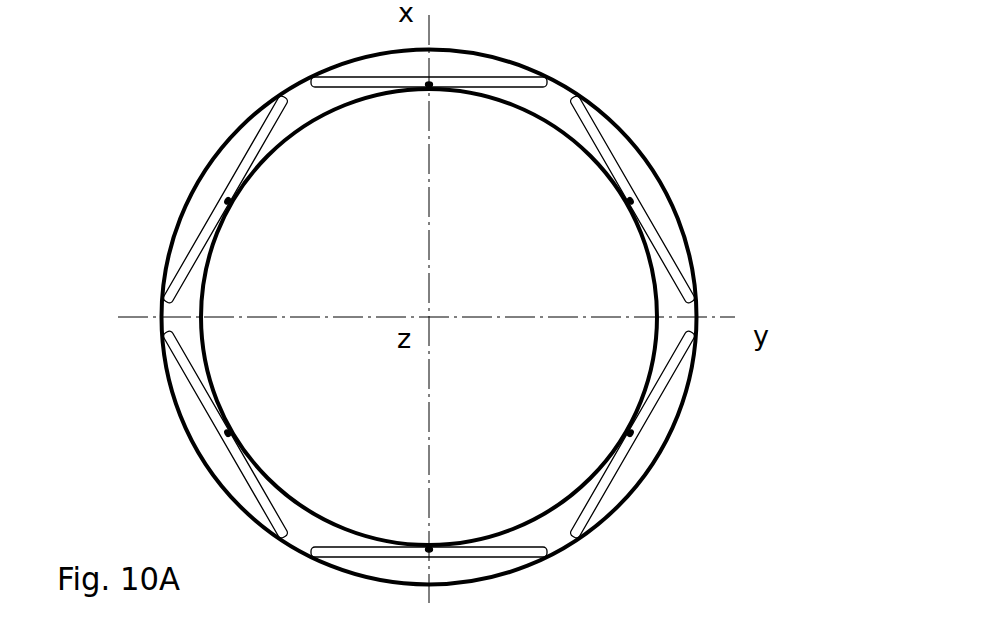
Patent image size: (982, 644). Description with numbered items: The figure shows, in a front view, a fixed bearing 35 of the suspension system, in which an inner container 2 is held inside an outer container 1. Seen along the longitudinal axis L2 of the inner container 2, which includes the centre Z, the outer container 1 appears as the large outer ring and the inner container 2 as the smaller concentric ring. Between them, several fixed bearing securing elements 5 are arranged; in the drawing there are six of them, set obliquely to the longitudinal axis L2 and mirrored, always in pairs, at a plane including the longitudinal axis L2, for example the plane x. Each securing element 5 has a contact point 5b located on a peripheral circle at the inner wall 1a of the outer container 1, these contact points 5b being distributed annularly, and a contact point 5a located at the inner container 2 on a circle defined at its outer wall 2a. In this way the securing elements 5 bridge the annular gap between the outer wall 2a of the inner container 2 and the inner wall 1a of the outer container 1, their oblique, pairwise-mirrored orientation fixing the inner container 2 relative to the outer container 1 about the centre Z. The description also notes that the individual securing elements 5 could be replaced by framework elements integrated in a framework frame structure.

The outer container 1 is at (470, 317).
The inner wall of the outer container 1a is at (686, 438).
The inner container 2 is at (429, 286).
The outer wall of the inner container 2a is at (312, 99).
The fixed bearing securing elements 5 is at (471, 281).
The contact points at the inner container 5a is at (623, 205).
The contact points at the outer container 5b is at (583, 97).
The fixed bearing 35 is at (127, 161).
The longitudinal axis of the inner container L2 is at (433, 312).